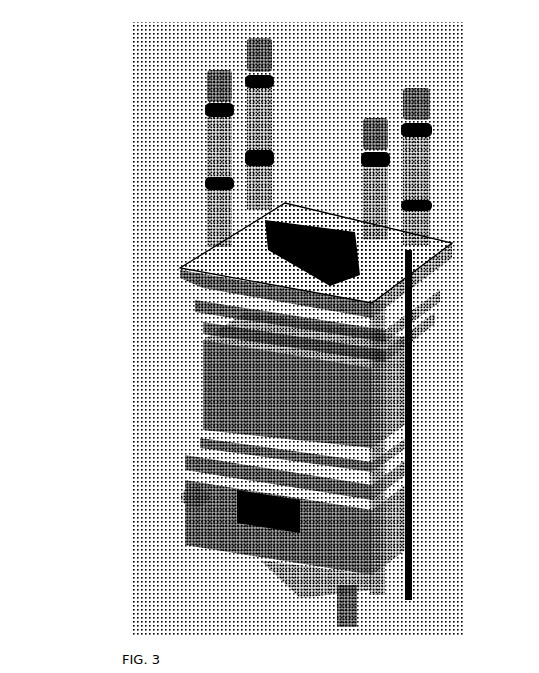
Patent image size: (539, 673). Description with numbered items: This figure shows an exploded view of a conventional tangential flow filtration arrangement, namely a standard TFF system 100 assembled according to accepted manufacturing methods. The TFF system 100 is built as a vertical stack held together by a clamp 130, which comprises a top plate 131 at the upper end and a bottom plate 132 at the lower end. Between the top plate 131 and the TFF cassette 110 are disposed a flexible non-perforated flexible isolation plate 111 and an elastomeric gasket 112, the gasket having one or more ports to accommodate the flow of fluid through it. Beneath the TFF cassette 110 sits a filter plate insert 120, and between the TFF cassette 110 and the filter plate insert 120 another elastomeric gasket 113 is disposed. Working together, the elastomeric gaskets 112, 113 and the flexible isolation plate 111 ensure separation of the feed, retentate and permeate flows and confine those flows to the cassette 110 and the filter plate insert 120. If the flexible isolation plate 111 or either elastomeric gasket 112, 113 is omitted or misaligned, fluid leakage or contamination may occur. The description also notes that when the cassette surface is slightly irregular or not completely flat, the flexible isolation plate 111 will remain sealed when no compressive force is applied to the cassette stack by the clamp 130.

The TFF system 100 is at (135, 137).
The TFF cassette 110 is at (205, 390).
The flexible isolation plate 111 is at (205, 303).
The elastomeric gasket 112 is at (210, 329).
The elastomeric gasket 113 is at (195, 447).
The filter plate insert 120 is at (195, 473).
The clamp 130 is at (452, 240).
The top plate 131 is at (185, 268).
The bottom plate 132 is at (190, 555).